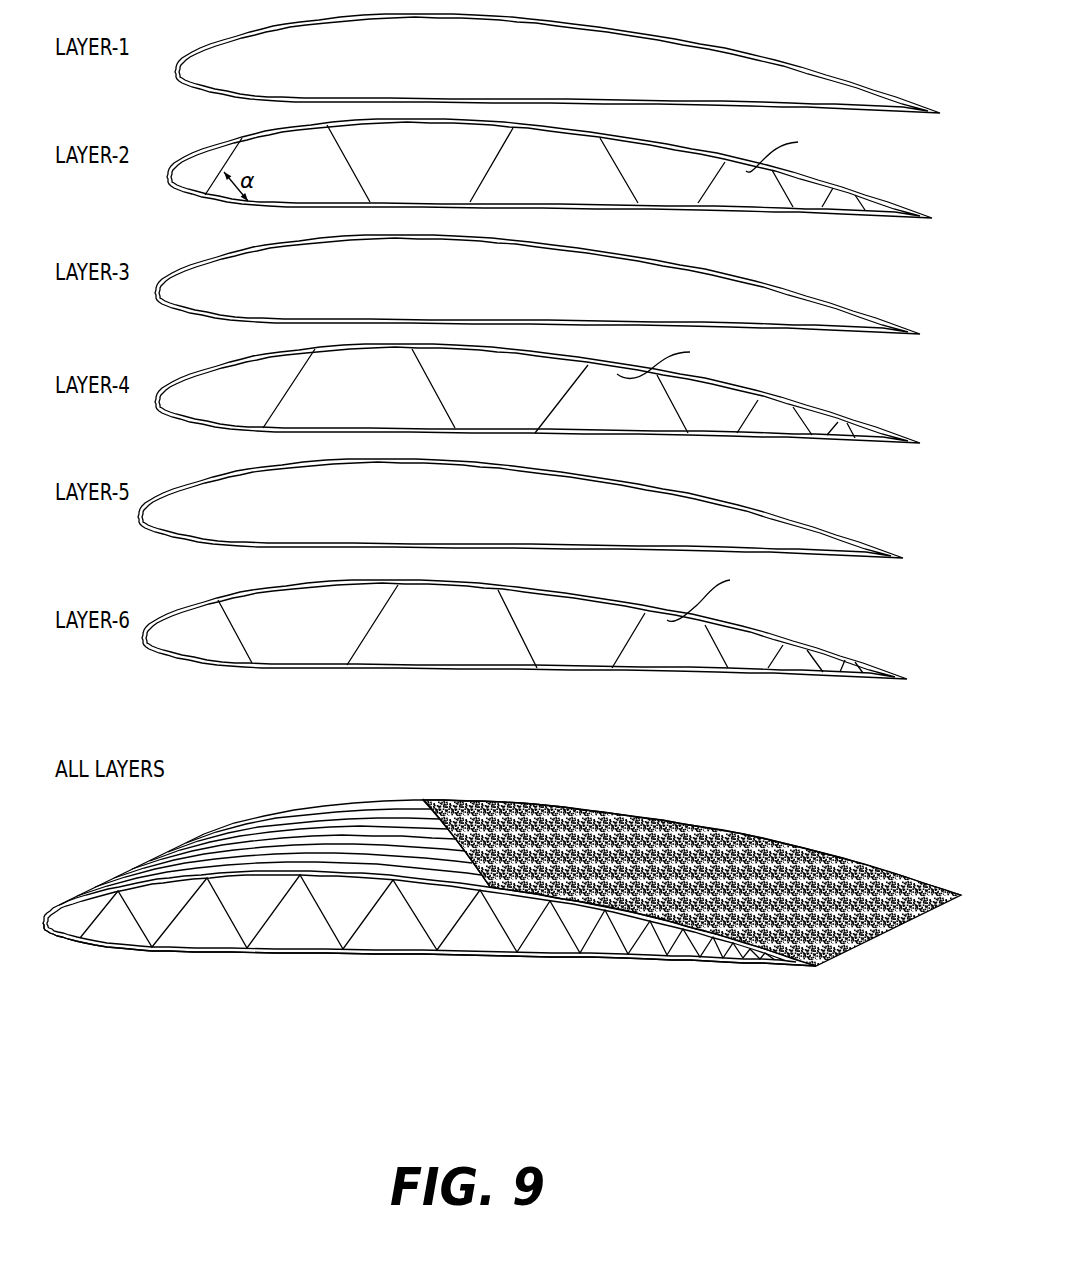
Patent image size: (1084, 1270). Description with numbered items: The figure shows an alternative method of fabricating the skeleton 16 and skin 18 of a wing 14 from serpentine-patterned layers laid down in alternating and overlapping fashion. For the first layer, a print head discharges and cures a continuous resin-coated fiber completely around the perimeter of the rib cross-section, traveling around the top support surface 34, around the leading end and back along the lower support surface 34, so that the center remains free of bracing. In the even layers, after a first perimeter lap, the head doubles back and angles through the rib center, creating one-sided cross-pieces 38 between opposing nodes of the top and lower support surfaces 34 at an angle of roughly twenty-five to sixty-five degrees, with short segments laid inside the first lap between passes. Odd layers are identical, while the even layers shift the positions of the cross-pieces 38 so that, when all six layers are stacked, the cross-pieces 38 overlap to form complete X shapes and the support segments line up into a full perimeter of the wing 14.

The wing 14 is at (76, 994).
The skeleton 16 is at (280, 962).
The skin 18 is at (587, 808).
The support surface 34 is at (633, 32).
The cross-piece 38 is at (620, 175).